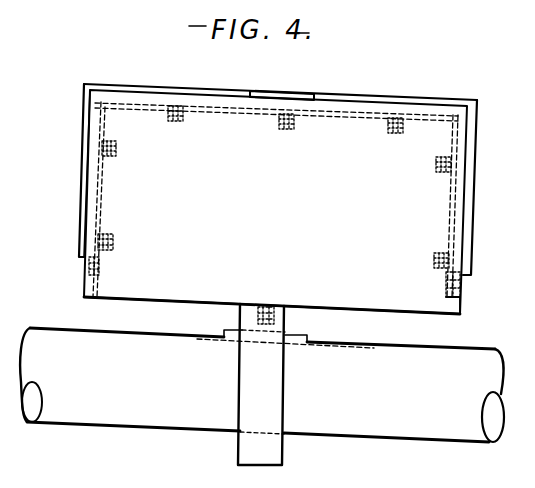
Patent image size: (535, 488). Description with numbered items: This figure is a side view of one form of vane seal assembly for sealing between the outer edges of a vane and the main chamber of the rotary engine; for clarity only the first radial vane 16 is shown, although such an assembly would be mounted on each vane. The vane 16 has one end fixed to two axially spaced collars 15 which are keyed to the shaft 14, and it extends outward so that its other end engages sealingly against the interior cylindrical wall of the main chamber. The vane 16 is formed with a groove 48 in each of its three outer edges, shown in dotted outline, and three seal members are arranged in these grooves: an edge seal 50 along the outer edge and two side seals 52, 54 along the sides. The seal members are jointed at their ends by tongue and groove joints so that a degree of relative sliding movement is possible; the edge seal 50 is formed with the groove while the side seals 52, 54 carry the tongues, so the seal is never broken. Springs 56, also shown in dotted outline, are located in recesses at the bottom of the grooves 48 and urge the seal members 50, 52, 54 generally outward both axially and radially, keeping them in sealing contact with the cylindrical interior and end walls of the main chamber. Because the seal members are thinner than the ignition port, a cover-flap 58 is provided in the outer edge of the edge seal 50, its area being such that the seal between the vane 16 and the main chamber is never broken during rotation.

The shaft 14 is at (110, 415).
The collars 15 is at (270, 454).
The first radial vane 16 is at (115, 274).
The groove 48 is at (146, 107).
The edge seal member 50 is at (128, 88).
The side seal member 52 is at (82, 152).
The side seal member 54 is at (468, 168).
The springs 56 is at (110, 144).
The cover-flap 58 is at (294, 90).